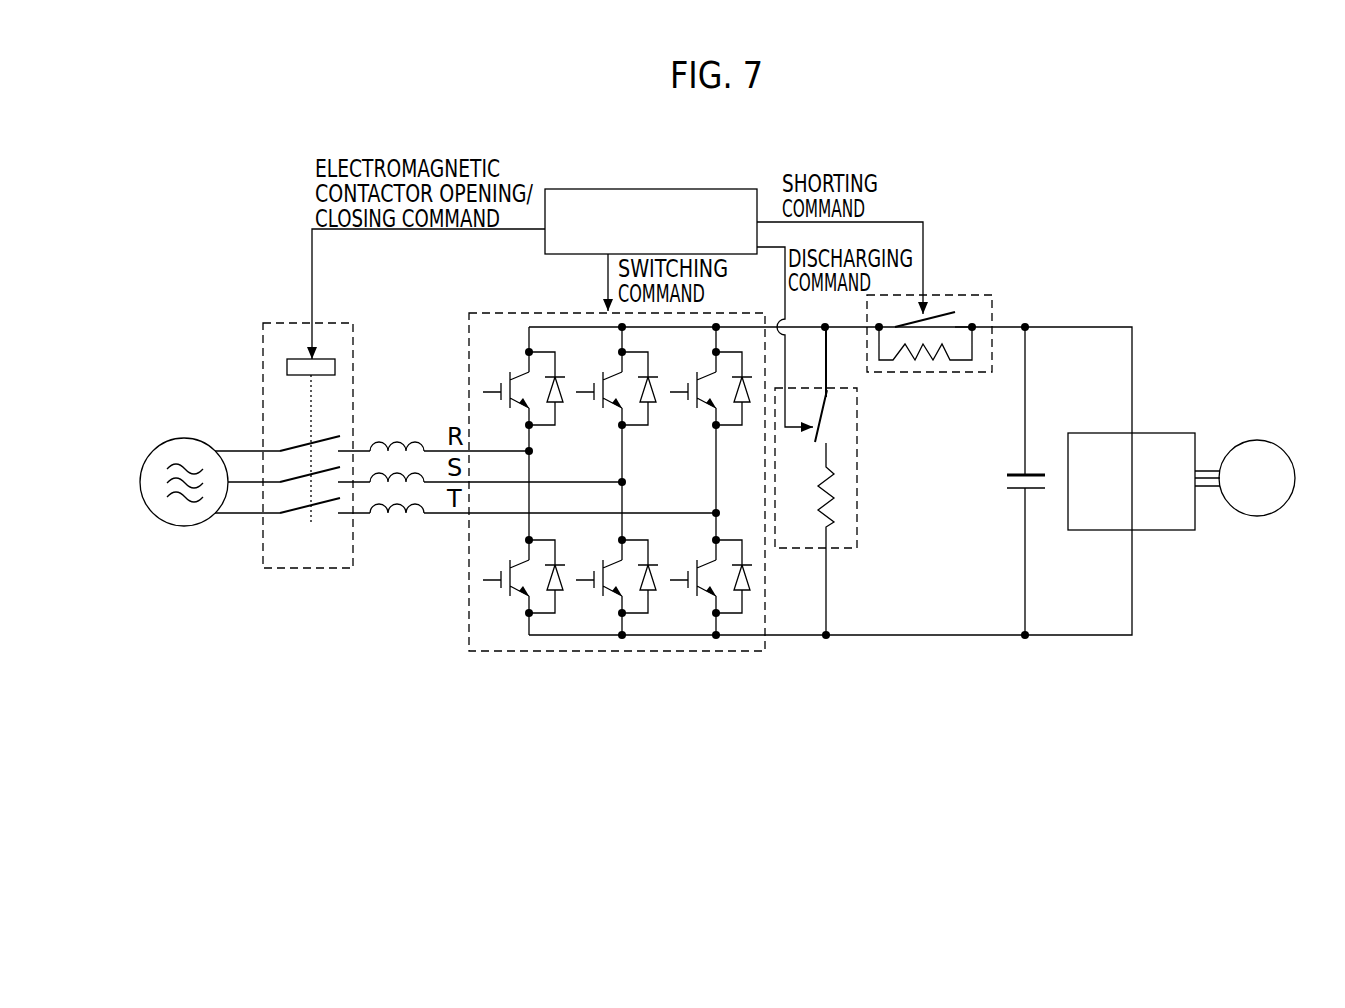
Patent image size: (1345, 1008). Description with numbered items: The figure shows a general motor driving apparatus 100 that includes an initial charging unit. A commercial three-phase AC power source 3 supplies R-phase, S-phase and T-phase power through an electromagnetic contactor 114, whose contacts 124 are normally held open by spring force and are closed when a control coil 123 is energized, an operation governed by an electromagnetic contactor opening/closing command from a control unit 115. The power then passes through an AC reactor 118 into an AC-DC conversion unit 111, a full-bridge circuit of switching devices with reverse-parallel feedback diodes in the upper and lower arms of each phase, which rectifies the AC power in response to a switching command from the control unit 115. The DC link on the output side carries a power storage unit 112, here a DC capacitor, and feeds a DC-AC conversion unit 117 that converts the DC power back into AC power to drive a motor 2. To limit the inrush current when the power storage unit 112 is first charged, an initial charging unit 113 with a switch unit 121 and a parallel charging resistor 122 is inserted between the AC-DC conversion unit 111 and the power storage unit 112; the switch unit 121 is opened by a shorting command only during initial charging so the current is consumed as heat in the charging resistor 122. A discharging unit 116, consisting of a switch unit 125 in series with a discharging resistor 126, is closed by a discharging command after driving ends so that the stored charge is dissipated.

The motor driving apparatus 100 is at (745, 752).
The control unit 115 is at (637, 189).
The AC power source 3 is at (173, 438).
The electromagnetic contactor 114 is at (277, 568).
The control coil 123 is at (311, 359).
The contacts 124 is at (295, 437).
The AC reactor 118 is at (398, 412).
The AC-DC conversion unit 111 is at (530, 653).
The discharging unit 116 is at (840, 550).
The switch unit for a discharging resistor 125 is at (827, 415).
The discharging resistor 126 is at (837, 475).
The initial charging unit 113 is at (983, 294).
The switch unit for shorting a charging resistor 121 is at (953, 312).
The charging resistor 122 is at (943, 352).
The power storage unit 112 is at (1040, 470).
The DC-AC conversion unit 117 is at (1162, 433).
The motor 2 is at (1253, 440).